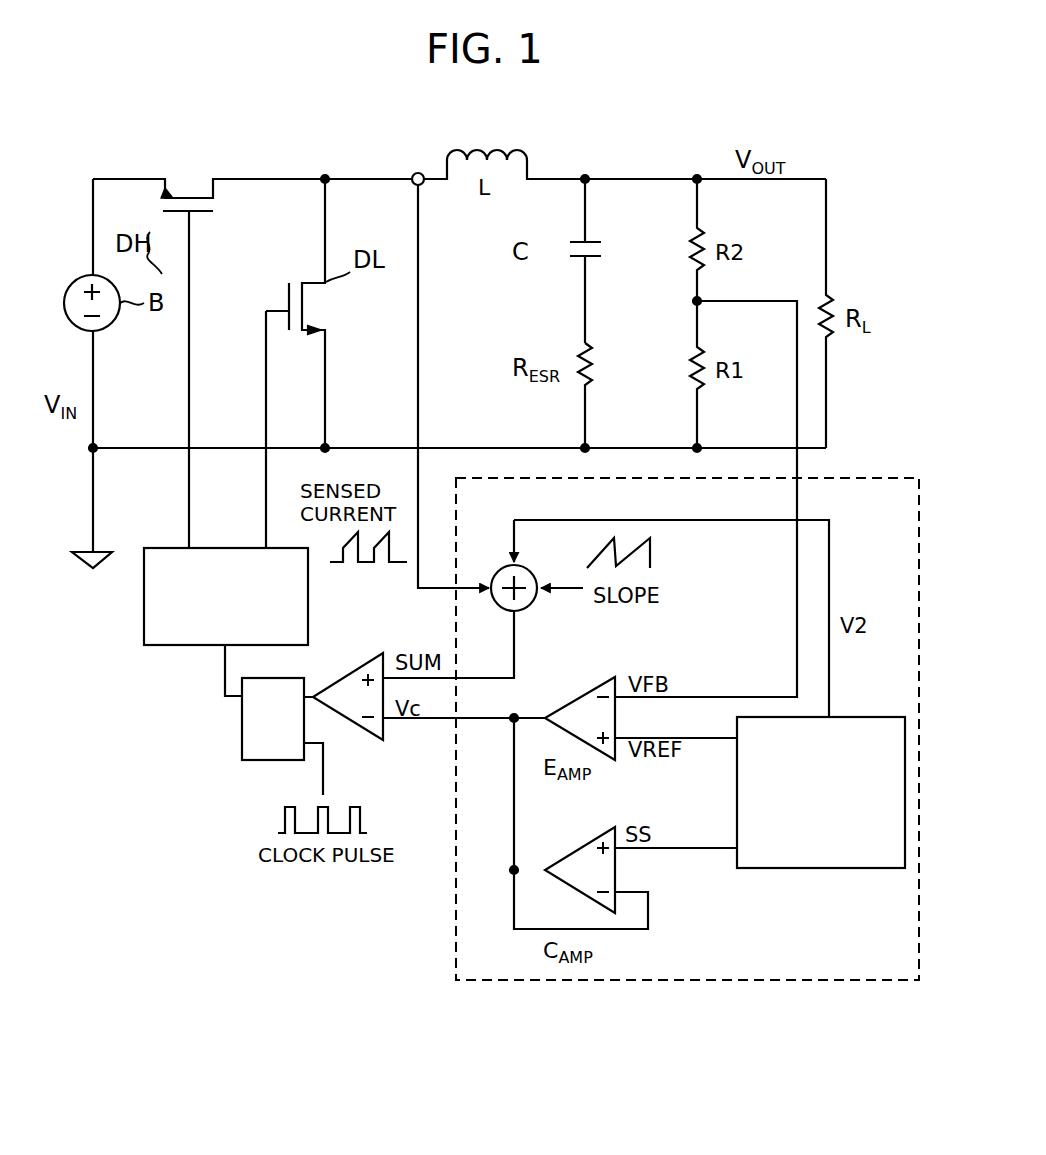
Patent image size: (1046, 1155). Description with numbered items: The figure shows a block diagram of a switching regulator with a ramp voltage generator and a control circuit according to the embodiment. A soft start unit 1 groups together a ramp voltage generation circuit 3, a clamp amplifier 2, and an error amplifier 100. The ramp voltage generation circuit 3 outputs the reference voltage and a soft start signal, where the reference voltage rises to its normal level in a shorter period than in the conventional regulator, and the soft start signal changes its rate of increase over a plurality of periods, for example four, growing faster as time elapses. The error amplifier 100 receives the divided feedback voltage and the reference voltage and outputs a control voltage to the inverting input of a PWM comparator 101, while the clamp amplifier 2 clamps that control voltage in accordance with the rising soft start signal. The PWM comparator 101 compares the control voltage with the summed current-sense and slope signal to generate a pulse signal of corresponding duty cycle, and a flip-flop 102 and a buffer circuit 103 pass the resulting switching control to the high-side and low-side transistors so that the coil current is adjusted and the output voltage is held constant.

The soft start unit 1 is at (863, 478).
The clamp amplifier 2 is at (576, 852).
The ramp voltage generation circuit 3 is at (737, 802).
The error amplifier 100 is at (570, 703).
The PWM comparator 101 is at (365, 670).
The RS flip-flop 102 is at (242, 735).
The buffer circuit 103 is at (155, 548).